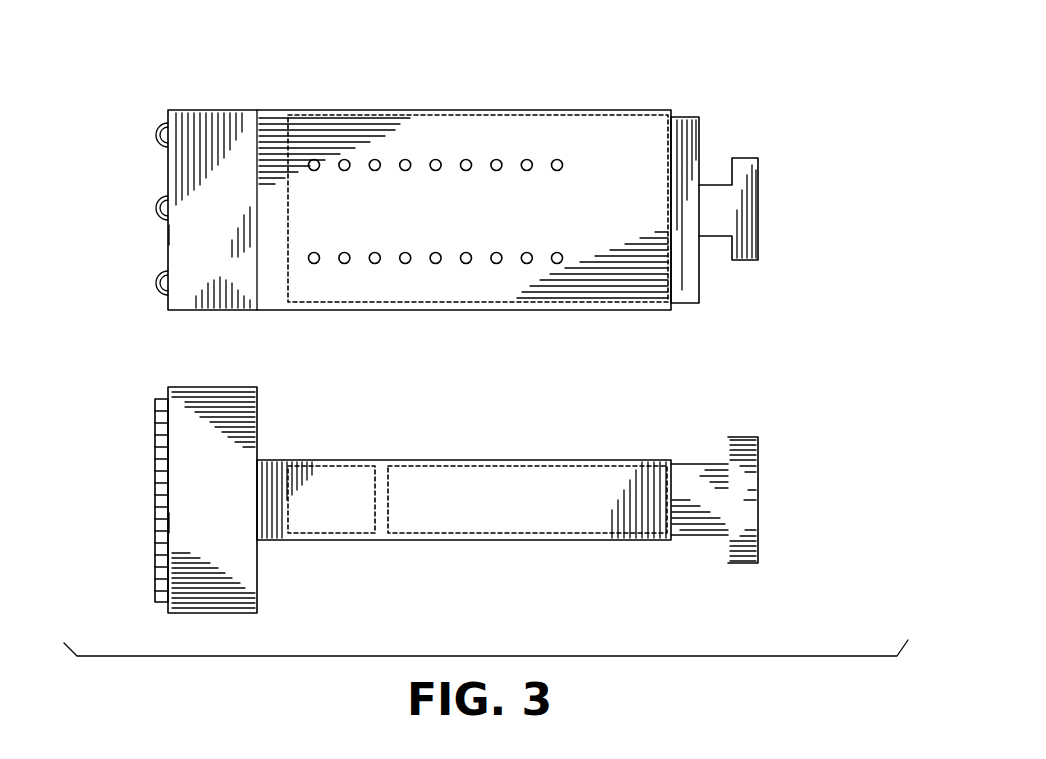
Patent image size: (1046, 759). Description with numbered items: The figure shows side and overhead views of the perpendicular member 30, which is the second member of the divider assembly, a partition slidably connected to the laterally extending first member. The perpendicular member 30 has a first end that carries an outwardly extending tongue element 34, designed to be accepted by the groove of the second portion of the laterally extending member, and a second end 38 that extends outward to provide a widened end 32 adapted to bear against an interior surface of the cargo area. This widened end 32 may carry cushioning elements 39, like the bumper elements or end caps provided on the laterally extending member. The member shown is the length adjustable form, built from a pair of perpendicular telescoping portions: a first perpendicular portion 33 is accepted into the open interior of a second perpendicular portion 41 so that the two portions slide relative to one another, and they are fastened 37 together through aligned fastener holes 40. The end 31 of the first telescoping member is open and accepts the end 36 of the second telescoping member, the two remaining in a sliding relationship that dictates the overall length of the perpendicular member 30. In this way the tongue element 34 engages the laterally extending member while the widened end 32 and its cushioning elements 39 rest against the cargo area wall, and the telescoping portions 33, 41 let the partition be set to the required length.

The perpendicular member 30 is at (213, 102).
The end of the first telescoping member 31 is at (671, 270).
The widened end 32 is at (245, 428).
The first perpendicular portion 33 is at (699, 137).
The tongue element 34 is at (758, 186).
The end of the second telescoping member 36 is at (290, 124).
The fastener 37 is at (390, 483).
The second end 38 is at (169, 235).
The cushioning elements 39 is at (156, 208).
The fastener holes 40 is at (563, 165).
The second perpendicular portion 41 is at (477, 541).